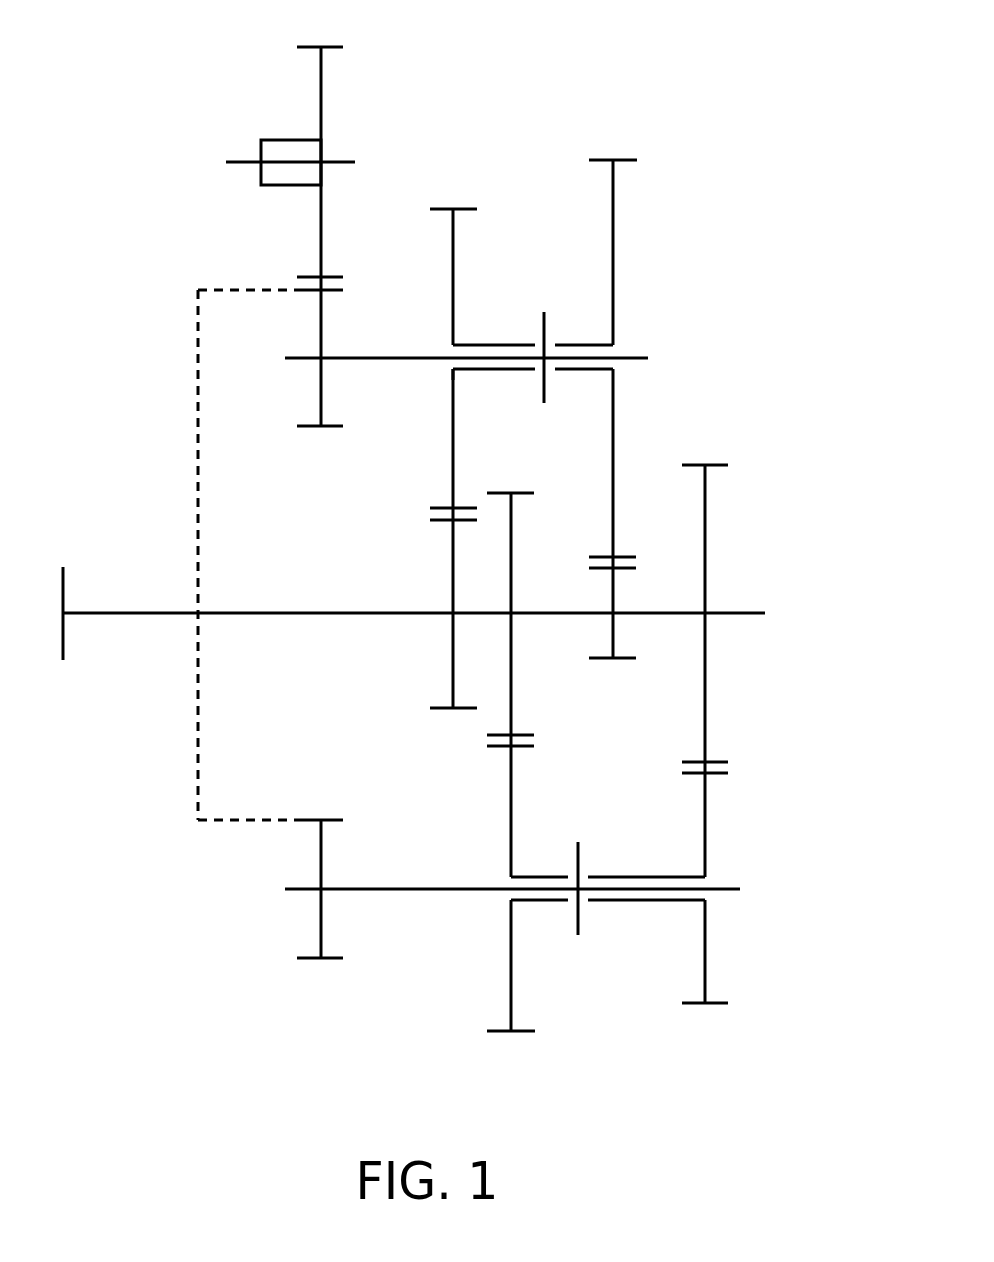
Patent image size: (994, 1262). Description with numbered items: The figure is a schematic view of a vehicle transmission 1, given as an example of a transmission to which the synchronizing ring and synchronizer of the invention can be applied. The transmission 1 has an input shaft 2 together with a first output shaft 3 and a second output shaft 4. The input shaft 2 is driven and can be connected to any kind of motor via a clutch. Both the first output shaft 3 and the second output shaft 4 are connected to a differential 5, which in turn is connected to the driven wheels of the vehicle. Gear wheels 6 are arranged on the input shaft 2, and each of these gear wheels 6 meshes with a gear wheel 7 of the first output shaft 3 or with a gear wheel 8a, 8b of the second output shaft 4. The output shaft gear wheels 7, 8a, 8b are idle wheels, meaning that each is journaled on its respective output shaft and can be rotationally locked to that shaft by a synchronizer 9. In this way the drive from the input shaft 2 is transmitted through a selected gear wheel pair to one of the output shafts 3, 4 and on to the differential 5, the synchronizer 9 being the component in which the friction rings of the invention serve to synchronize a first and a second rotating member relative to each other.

The vehicle transmission 1 is at (632, 72).
The input shaft 2 is at (137, 613).
The first output shaft 3 is at (400, 358).
The second output shaft 4 is at (433, 889).
The differential 5 is at (228, 122).
The gear wheels 6 is at (453, 657).
The gear wheel 7 is at (453, 277).
The gear wheel 8a is at (512, 967).
The gear wheel 8b is at (705, 952).
The synchronizer 9 is at (544, 329).